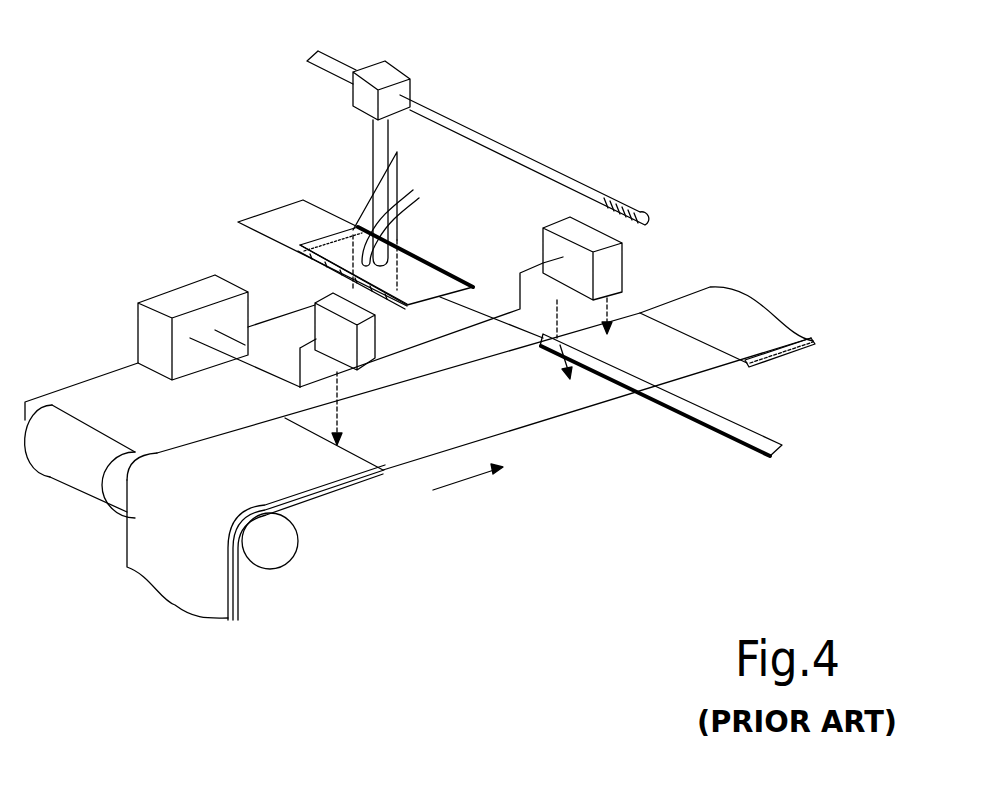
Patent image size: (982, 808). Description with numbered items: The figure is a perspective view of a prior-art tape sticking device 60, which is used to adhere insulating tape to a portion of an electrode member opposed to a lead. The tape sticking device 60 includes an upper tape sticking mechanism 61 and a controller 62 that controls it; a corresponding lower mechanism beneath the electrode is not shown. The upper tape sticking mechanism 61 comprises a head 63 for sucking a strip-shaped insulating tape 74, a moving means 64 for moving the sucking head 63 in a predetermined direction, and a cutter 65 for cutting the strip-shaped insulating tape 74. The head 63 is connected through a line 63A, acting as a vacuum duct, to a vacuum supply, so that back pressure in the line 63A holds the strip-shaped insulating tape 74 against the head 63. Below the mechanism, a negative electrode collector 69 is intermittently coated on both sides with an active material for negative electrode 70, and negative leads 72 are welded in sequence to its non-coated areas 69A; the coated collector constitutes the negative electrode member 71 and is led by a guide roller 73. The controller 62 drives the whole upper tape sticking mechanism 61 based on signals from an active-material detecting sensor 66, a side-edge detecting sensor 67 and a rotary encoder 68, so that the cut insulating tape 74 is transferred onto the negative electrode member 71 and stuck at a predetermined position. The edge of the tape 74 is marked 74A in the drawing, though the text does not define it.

The tape sticking device 60 is at (660, 490).
The upper tape sticking mechanism 61 is at (258, 106).
The controller 62 is at (173, 303).
The head 63 is at (440, 278).
The line 63A is at (412, 207).
The moving means 64 is at (412, 68).
The cutter 65 is at (367, 203).
The active-material detecting sensor 66 is at (370, 347).
The side-edge detecting sensor 67 is at (615, 272).
The rotary encoder 68 is at (57, 455).
The negative electrode collector 69 is at (412, 467).
The non-coated areas 69A is at (495, 420).
The active material for negative electrode 70 is at (333, 490).
The negative electrode member 71 is at (356, 542).
The negative leads 72 is at (748, 433).
The guide roller 73 is at (285, 547).
The strip-shaped insulating tape 74 is at (258, 229).
The plate edge 74A is at (323, 273).